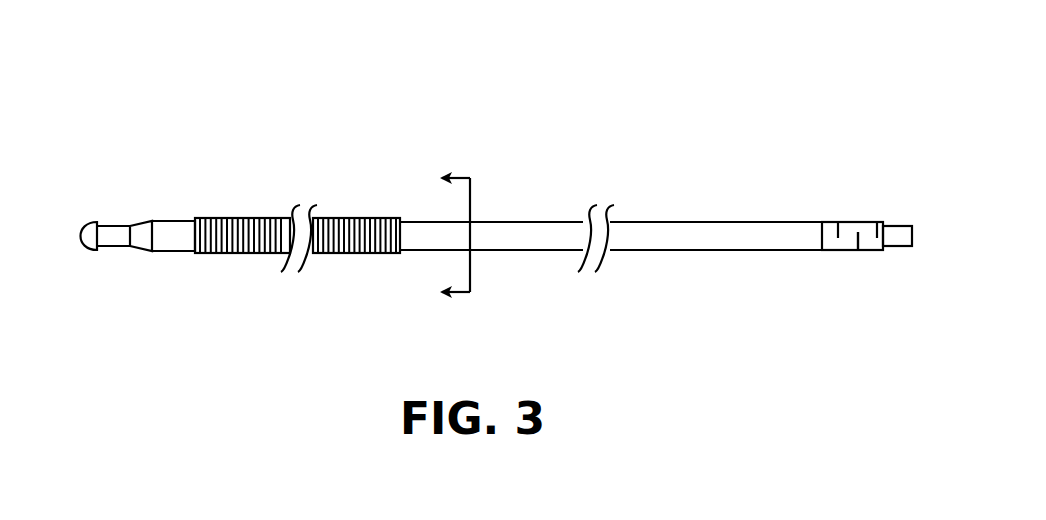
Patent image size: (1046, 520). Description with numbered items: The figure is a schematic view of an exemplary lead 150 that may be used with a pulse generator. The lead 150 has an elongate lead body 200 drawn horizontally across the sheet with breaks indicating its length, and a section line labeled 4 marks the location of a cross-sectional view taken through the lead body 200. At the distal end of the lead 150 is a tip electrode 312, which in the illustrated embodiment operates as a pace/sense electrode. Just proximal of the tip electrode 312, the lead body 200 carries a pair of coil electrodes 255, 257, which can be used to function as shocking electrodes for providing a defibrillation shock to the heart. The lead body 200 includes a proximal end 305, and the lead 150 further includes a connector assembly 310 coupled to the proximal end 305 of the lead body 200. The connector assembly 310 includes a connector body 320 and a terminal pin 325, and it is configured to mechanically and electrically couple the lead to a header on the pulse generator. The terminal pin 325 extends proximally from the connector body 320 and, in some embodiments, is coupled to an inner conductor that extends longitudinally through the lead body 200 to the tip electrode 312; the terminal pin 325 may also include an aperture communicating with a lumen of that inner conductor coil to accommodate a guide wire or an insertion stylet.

The lead 150 is at (490, 98).
The tip electrode 312 is at (80, 237).
The coil electrode 255 is at (235, 218).
The coil electrode 257 is at (330, 215).
The section line 4- 4 is at (453, 237).
The lead body 200 is at (493, 250).
The proximal end 305 is at (676, 240).
The connector assembly 310 is at (843, 221).
The connector body 320 is at (863, 266).
The terminal pin 325 is at (895, 222).